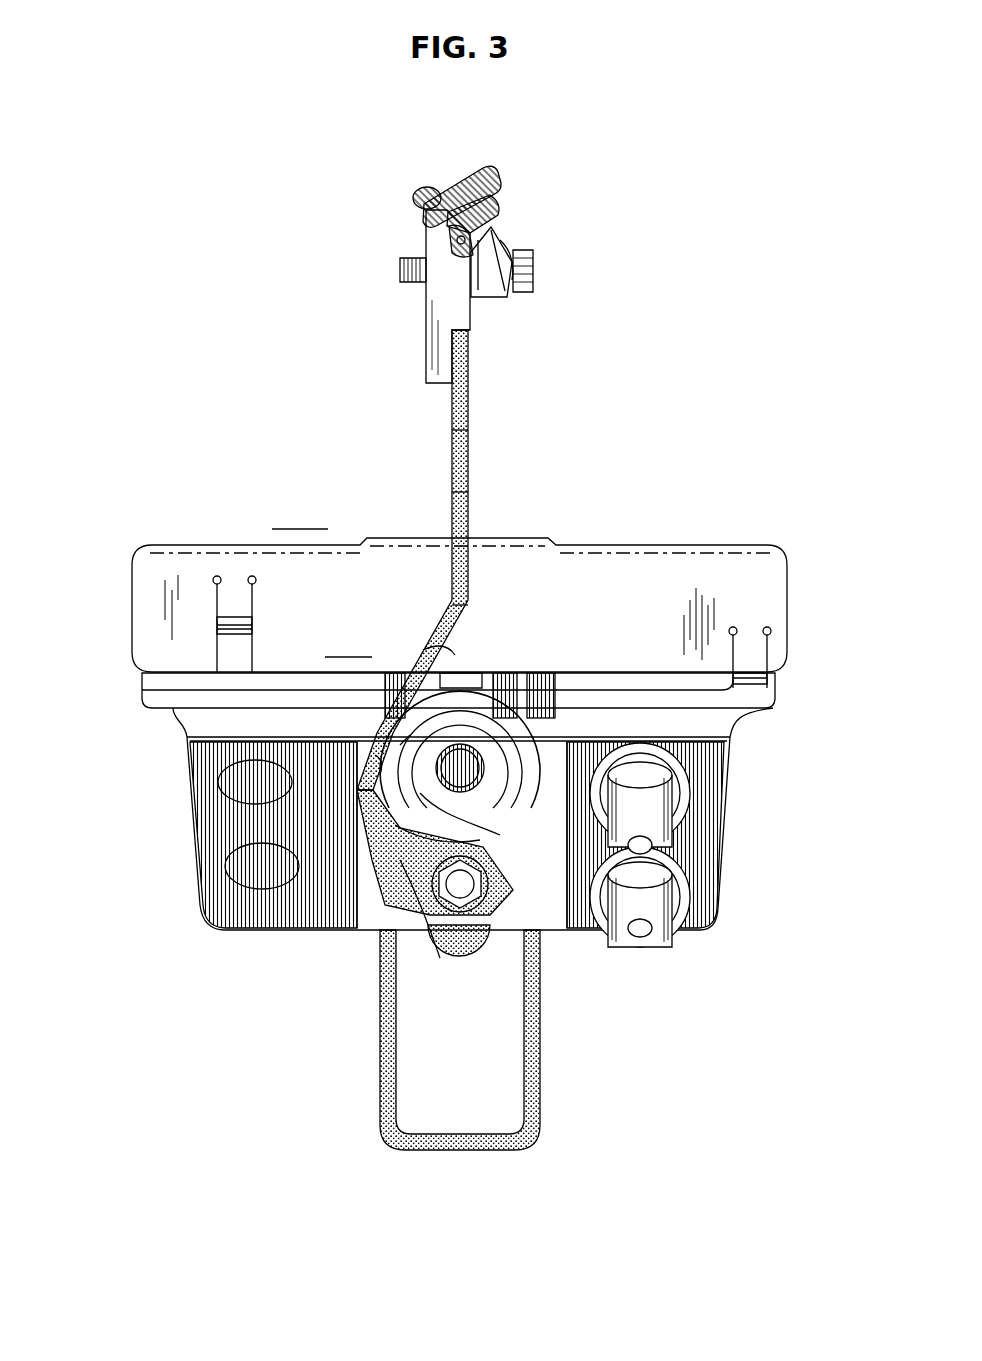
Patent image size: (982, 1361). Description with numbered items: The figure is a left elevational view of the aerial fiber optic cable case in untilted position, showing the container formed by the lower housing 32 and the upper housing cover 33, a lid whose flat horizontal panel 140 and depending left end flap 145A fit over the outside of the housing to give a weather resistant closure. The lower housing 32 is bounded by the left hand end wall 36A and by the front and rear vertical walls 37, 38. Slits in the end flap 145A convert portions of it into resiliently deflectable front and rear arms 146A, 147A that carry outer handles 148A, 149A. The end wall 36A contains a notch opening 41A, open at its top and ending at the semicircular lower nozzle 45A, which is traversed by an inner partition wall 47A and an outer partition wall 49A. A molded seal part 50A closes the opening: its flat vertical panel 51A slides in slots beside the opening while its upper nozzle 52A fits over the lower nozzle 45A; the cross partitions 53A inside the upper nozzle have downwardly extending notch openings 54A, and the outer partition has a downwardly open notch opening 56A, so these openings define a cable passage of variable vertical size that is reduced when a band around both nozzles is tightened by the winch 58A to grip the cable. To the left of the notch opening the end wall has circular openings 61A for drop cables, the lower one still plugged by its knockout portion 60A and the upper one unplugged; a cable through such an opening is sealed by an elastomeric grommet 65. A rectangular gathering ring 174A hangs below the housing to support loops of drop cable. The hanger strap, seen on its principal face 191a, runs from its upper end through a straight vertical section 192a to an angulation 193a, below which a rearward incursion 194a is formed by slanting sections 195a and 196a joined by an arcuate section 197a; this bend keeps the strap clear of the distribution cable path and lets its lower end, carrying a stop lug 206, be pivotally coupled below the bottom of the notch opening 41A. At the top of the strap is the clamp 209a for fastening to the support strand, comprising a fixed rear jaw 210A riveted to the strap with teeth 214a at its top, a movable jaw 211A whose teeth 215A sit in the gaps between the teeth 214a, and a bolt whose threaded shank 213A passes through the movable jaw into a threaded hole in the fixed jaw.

The teeth 214a is at (460, 173).
The teeth 215A is at (433, 190).
The stop lug 206 is at (445, 235).
The threaded shank 213A is at (400, 270).
The clamp 209a is at (533, 270).
The fixed rear jaw 210A is at (438, 325).
The movable jaw 211A is at (493, 293).
The panel 140 is at (430, 538).
The principal face 191a is at (465, 438).
The vertical section 192a is at (465, 492).
The angulation 193a is at (463, 607).
The upper housing cover 33 is at (682, 577).
The end flap 145A is at (459, 588).
The handle 149A is at (218, 635).
The rear arm 147A is at (235, 642).
The front arm 146A is at (753, 652).
The handle 148A is at (765, 680).
The slanting section 195a is at (425, 652).
The winch 58A is at (442, 652).
The notch opening 41A is at (452, 655).
The panel 51A is at (523, 673).
The seal part 50A is at (553, 720).
The rearward incursion 194a is at (375, 680).
The arcuate section 197a is at (312, 740).
The notch openings 54A is at (397, 733).
The upper nozzle 52A is at (378, 762).
The cross partitions 53A is at (520, 740).
The circular opening 61A is at (223, 768).
The rear vertical wall 38 is at (187, 817).
The lower nozzle 45A is at (362, 813).
The knockout portion 60A is at (245, 863).
The left hand end wall 36A is at (243, 930).
The notch opening 56A is at (483, 793).
The inner partition wall 47A is at (468, 797).
The outer partition wall 49A is at (487, 852).
The slanting section 196a is at (407, 920).
The lower housing 32 is at (730, 747).
The front vertical wall 37 is at (730, 790).
The grommet 65 is at (692, 822).
The gathering ring 174A is at (463, 1152).